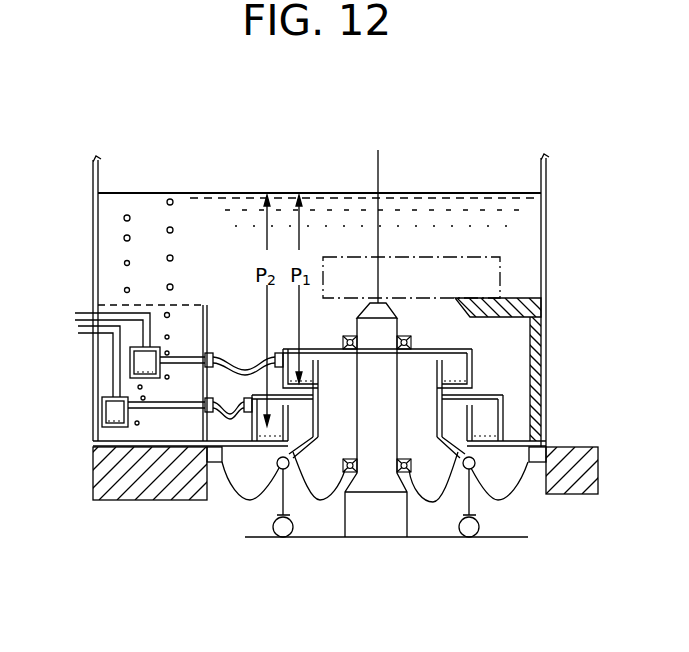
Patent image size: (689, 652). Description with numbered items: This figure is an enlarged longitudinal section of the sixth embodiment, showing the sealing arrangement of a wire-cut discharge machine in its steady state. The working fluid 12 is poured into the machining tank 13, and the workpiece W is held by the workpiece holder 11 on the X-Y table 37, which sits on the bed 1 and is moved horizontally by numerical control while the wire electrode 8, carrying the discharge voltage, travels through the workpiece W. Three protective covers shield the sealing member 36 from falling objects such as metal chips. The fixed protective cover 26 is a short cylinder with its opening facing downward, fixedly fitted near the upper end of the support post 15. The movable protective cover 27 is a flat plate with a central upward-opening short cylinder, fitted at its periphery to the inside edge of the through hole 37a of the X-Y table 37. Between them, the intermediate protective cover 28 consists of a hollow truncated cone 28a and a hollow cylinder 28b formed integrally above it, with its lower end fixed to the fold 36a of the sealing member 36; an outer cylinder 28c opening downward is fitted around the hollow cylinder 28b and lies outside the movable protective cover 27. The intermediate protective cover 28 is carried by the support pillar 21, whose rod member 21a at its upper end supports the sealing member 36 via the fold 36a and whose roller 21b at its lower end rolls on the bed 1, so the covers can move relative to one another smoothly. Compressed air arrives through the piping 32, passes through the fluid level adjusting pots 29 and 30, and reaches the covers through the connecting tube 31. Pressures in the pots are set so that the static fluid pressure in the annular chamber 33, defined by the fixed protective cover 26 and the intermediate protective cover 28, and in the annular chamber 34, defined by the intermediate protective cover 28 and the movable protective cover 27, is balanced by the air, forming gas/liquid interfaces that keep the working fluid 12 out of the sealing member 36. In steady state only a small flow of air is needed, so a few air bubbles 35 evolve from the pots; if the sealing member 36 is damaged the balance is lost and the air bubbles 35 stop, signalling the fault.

The bed 1 is at (523, 531).
The wire electrode 8 is at (378, 162).
The workpiece holder 11 is at (517, 298).
The working fluid 12 is at (475, 195).
The machining tank 13 is at (548, 170).
The support post 15 is at (377, 445).
The support pillar 21 is at (290, 493).
The rod member 21a is at (278, 468).
The roller 21b is at (283, 540).
The fixed protective cover 26 is at (462, 346).
The movable protective cover 27 is at (470, 415).
The intermediate protective cover 28 is at (458, 365).
The hollow truncated cone 28a is at (445, 470).
The hollow cylinder 28b is at (440, 450).
The outer cylinder 28c is at (500, 402).
The fluid level adjusting pot 29 is at (128, 362).
The fluid level adjusting pot 30 is at (102, 412).
The connecting tube 31 is at (222, 405).
The piping 32 is at (78, 331).
The annular chamber 33 is at (307, 358).
The annular chamber 34 is at (283, 402).
The air bubbles 35 is at (127, 216).
The sealing member 36 is at (515, 492).
The fold 36a is at (498, 505).
The X-Y table 37 is at (592, 454).
The through hole 37a is at (213, 488).
The workpiece W is at (487, 262).